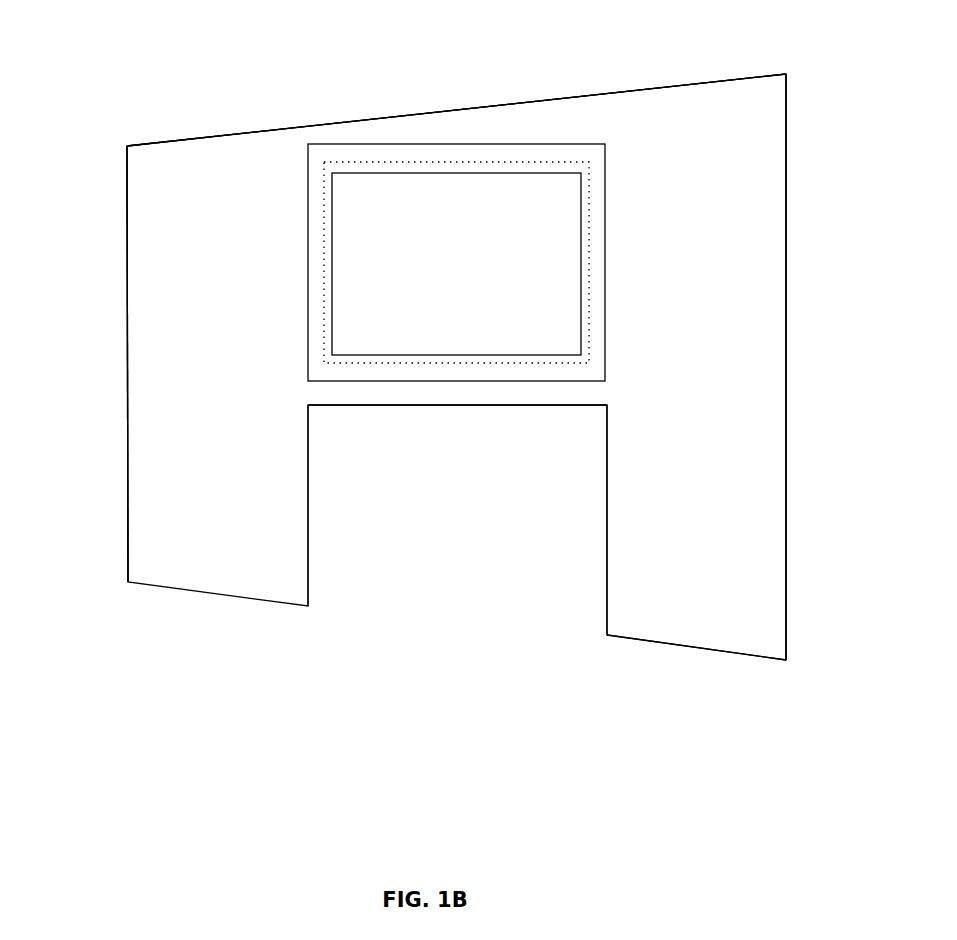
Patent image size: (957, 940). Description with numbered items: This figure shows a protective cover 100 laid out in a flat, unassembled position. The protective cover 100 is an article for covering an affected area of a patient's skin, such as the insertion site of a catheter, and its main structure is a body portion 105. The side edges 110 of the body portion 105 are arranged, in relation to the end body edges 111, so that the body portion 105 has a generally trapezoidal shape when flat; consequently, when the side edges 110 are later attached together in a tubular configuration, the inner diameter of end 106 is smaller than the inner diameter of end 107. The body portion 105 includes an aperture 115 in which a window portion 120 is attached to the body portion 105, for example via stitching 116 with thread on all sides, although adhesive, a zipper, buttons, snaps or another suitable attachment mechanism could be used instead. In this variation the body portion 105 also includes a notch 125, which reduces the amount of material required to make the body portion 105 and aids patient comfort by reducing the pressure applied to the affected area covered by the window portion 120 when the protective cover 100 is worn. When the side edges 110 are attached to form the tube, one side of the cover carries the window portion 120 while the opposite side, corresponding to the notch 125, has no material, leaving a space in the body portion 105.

The protective cover 100 is at (133, 639).
The body portion 105 is at (190, 137).
The end 106 is at (127, 492).
The end 107 is at (787, 208).
The side edges 110 is at (654, 88).
The end body edges 111 is at (127, 343).
The aperture 115 is at (382, 173).
The stitching 116 is at (423, 162).
The window portion 120 is at (489, 144).
The notch 125 is at (457, 622).